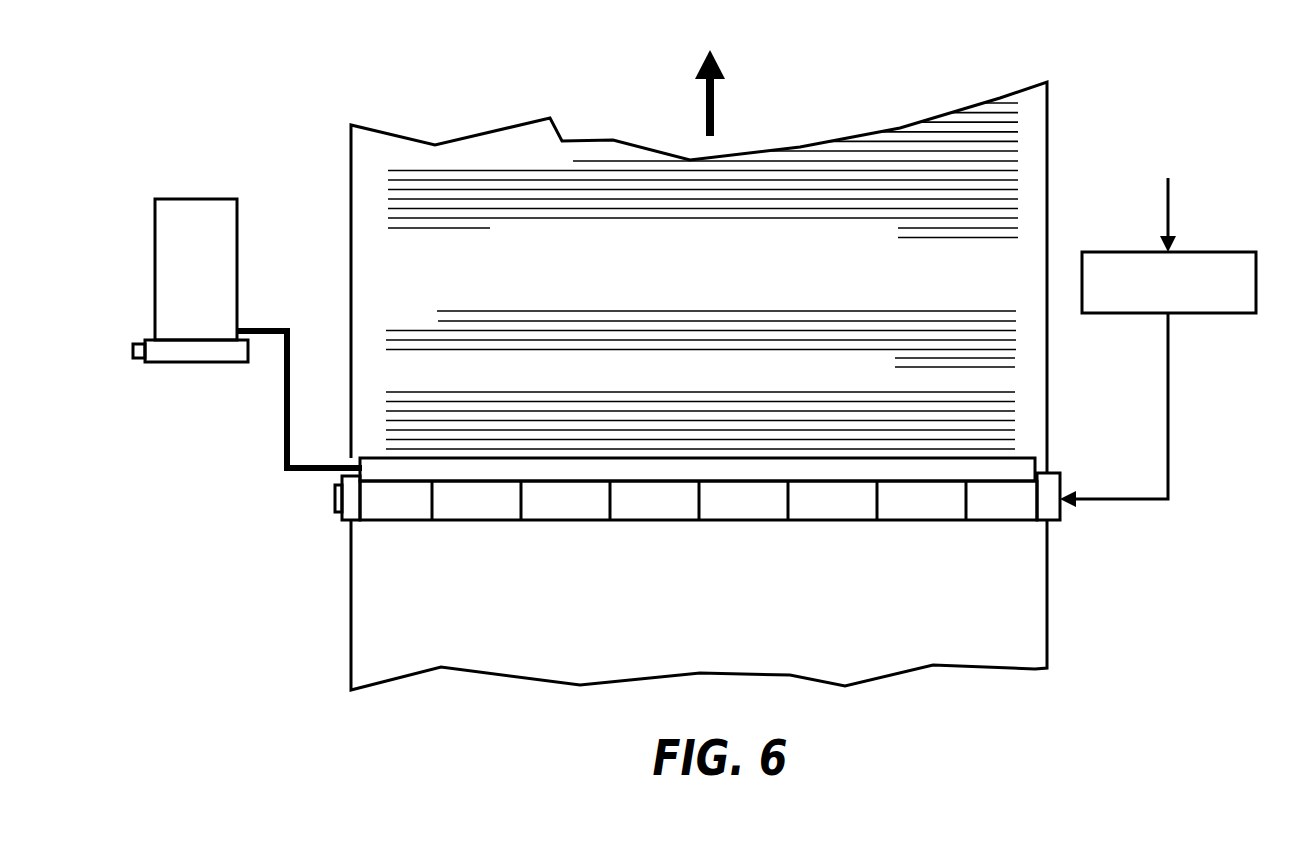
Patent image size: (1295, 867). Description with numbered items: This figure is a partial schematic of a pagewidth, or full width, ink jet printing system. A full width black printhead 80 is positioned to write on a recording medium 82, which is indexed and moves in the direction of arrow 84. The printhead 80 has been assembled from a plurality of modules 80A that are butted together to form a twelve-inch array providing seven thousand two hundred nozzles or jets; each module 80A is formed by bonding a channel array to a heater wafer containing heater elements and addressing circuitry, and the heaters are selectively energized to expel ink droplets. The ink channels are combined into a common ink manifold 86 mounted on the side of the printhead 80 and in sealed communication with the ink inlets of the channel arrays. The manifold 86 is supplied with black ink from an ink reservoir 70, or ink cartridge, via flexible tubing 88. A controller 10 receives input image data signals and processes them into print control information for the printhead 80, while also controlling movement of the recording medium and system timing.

The controller 10 is at (1230, 252).
The ink reservoir 70 is at (197, 199).
The printhead 80 is at (1066, 475).
The modules 80A is at (912, 528).
The recording medium 82 is at (1052, 137).
The arrow 84 is at (713, 112).
The ink manifold 86 is at (1023, 457).
The flexible tubing 88 is at (287, 420).